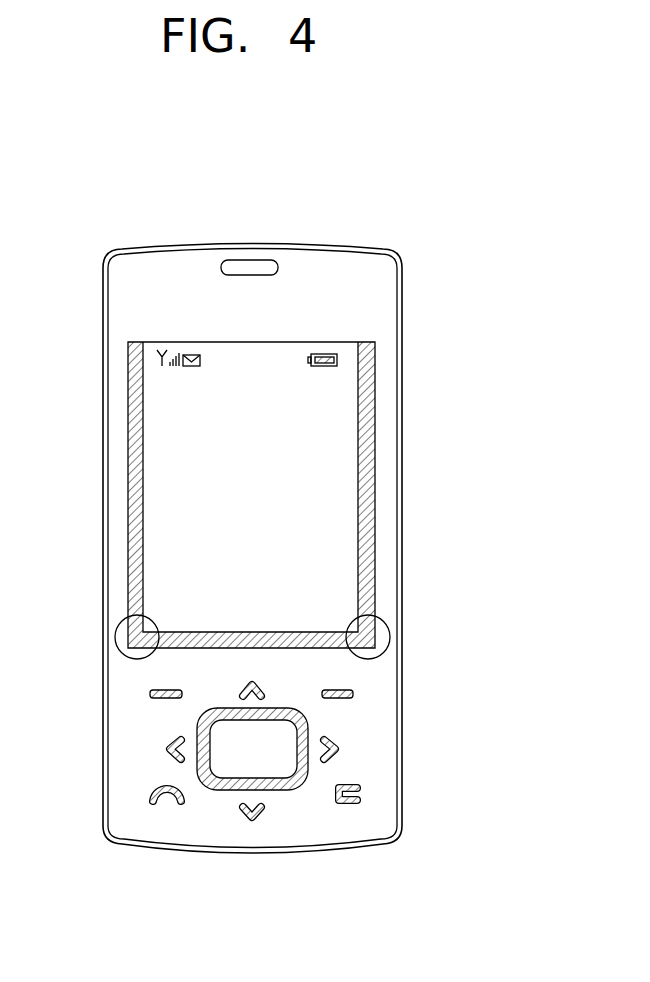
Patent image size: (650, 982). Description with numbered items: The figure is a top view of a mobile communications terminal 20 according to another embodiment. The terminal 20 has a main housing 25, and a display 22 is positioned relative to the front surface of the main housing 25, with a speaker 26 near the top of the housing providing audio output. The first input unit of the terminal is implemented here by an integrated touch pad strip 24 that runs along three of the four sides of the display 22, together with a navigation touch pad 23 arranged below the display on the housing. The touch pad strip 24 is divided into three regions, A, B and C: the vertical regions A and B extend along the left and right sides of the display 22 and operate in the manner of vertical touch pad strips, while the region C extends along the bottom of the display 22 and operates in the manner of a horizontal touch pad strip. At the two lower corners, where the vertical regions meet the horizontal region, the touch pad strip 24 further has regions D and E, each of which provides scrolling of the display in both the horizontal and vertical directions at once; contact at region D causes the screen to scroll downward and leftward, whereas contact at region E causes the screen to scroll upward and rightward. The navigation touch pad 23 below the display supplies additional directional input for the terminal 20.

The terminal 20 is at (311, 530).
The display 22 is at (294, 495).
The navigation touch pad 23 is at (358, 742).
The touch pad strip 24 is at (375, 430).
The main housing 25 is at (403, 373).
The speaker 26 is at (250, 260).
The vertical region A is at (128, 485).
The vertical region B is at (375, 480).
The horizontal region C is at (200, 650).
The corner region D is at (115, 637).
The corner region E is at (390, 637).